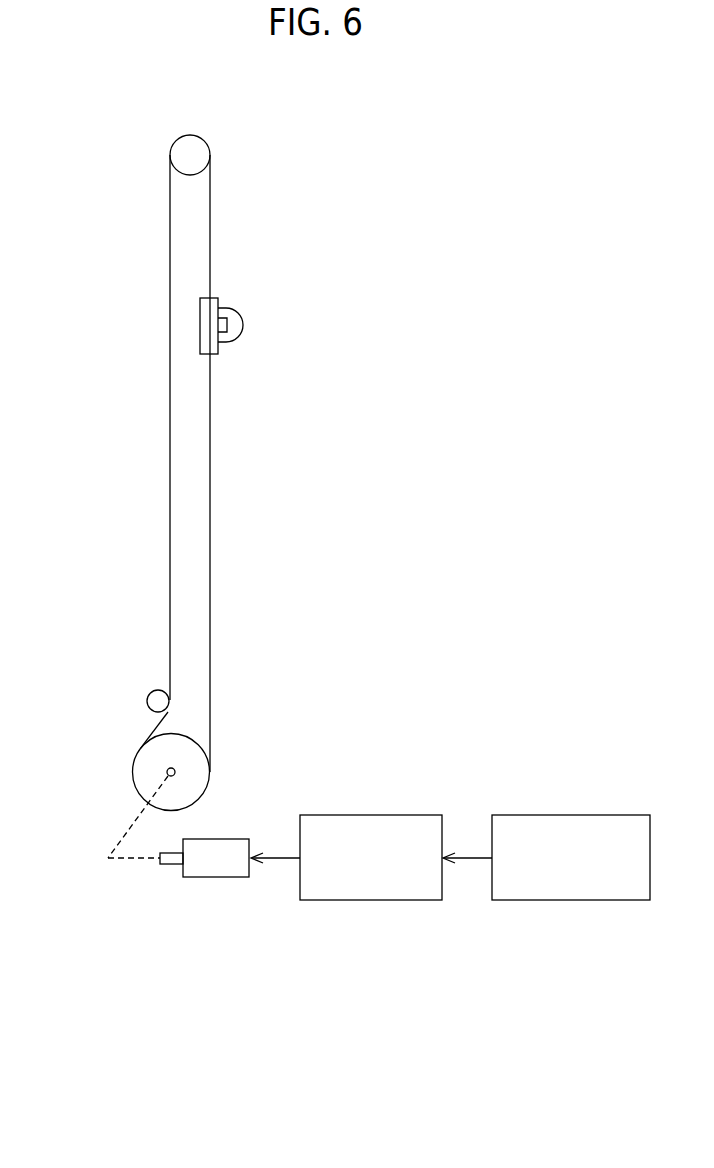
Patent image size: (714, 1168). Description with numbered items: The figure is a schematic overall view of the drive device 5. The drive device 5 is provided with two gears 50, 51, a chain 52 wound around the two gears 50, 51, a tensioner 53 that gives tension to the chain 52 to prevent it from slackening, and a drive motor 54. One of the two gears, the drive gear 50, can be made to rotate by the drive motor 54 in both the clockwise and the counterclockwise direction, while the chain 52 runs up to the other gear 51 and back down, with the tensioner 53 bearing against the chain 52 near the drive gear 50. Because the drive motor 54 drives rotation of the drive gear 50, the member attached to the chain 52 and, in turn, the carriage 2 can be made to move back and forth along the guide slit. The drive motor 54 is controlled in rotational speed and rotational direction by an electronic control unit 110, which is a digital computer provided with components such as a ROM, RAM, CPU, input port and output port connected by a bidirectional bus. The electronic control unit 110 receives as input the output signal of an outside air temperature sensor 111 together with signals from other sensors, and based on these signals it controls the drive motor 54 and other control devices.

The drive device 5 is at (118, 215).
The carriage 2 is at (230, 325).
The drive gear 50 is at (193, 783).
The gear 51 is at (197, 148).
The chain 52 is at (210, 490).
The tensioner 53 is at (157, 698).
The drive motor 54 is at (213, 878).
The electronic control unit 110 is at (366, 900).
The outside air temperature sensor 111 is at (565, 900).